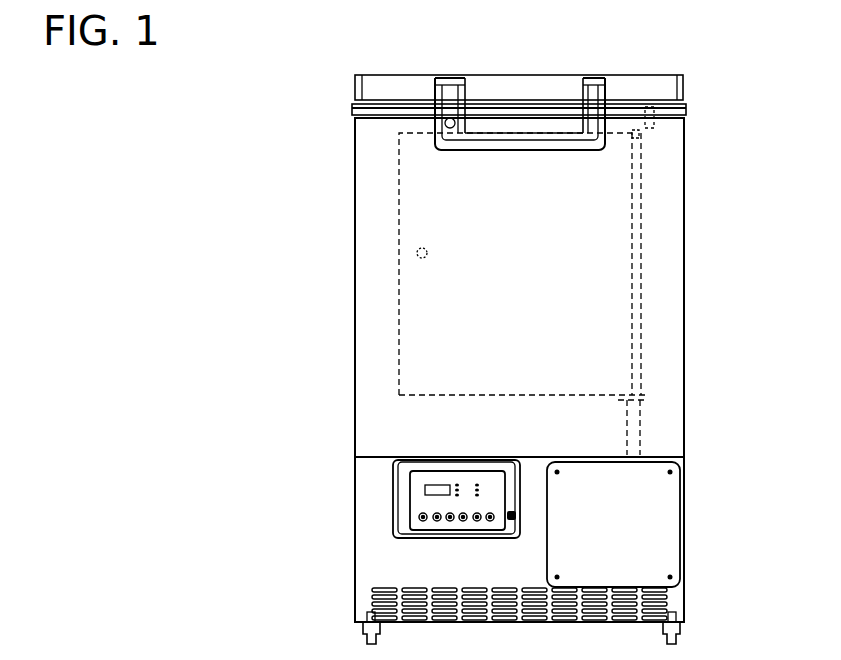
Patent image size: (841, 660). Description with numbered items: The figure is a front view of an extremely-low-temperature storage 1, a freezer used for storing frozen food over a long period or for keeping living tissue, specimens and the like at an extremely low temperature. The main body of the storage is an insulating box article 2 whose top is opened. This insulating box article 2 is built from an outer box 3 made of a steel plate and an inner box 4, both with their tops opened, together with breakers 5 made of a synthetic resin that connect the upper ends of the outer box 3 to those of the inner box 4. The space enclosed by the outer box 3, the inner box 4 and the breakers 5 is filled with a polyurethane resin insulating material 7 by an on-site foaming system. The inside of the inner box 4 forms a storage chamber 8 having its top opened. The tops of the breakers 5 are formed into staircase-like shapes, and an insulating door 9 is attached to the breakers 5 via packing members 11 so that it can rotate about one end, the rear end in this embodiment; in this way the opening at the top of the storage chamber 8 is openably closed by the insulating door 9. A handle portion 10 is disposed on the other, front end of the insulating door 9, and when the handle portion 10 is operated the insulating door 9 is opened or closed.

The extremely-low-temperature storage 1 is at (312, 153).
The insulating box article 2 is at (376, 231).
The outer box 3 is at (686, 312).
The inner box 4 is at (398, 341).
The breakers 5 is at (389, 128).
The insulating material 7 is at (686, 392).
The storage chamber 8 is at (529, 289).
The insulating door 9 is at (524, 84).
The handle portion 10 is at (597, 98).
The packing members 11 is at (612, 136).